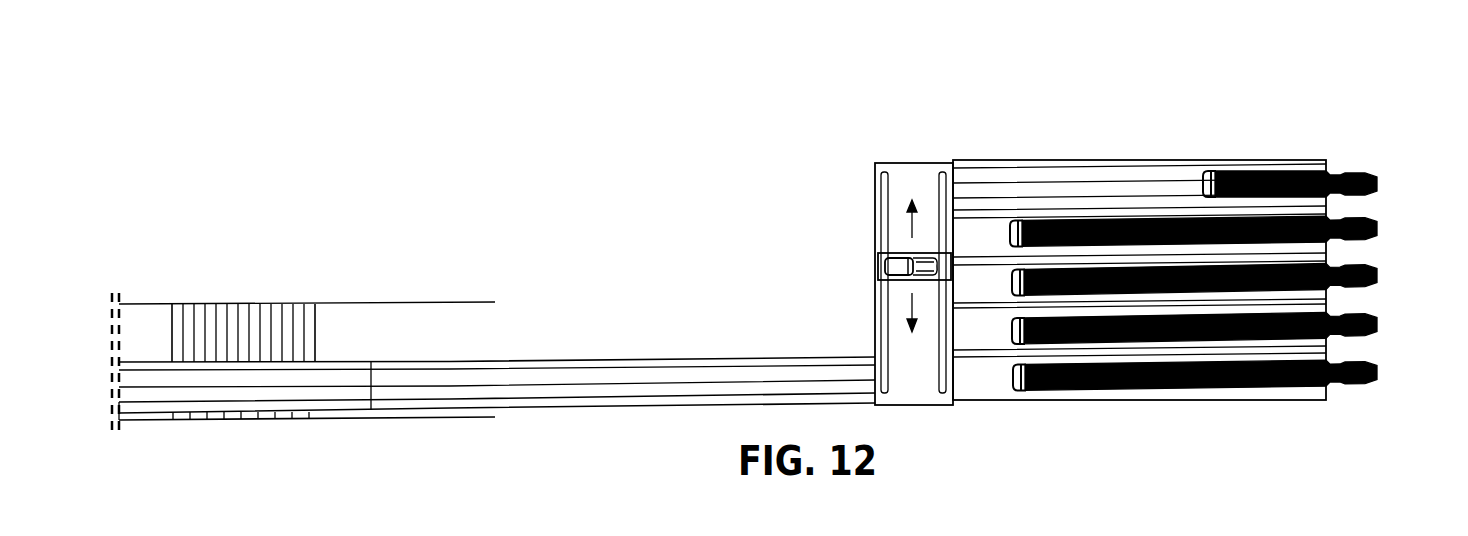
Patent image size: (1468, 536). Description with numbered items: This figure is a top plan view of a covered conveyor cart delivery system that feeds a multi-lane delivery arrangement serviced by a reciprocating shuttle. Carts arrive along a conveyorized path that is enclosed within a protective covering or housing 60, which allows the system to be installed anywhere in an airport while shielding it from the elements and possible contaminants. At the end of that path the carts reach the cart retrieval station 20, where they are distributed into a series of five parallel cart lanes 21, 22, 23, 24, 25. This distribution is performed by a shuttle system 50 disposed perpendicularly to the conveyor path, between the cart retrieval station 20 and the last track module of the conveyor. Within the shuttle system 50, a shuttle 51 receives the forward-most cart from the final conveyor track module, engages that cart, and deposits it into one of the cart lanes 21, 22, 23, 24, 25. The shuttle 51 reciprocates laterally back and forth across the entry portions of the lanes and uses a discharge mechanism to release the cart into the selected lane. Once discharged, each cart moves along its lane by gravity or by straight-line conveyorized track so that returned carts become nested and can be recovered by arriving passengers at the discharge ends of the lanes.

The cart retrieval station 20 is at (1112, 122).
The cart lane 21 is at (1262, 172).
The cart lane 22 is at (1118, 218).
The cart lane 23 is at (1360, 263).
The cart lane 24 is at (1345, 312).
The cart lane 25 is at (1291, 390).
The shuttle system 50 is at (905, 178).
The shuttle 51 is at (880, 276).
The protective covering or housing 60 is at (528, 377).